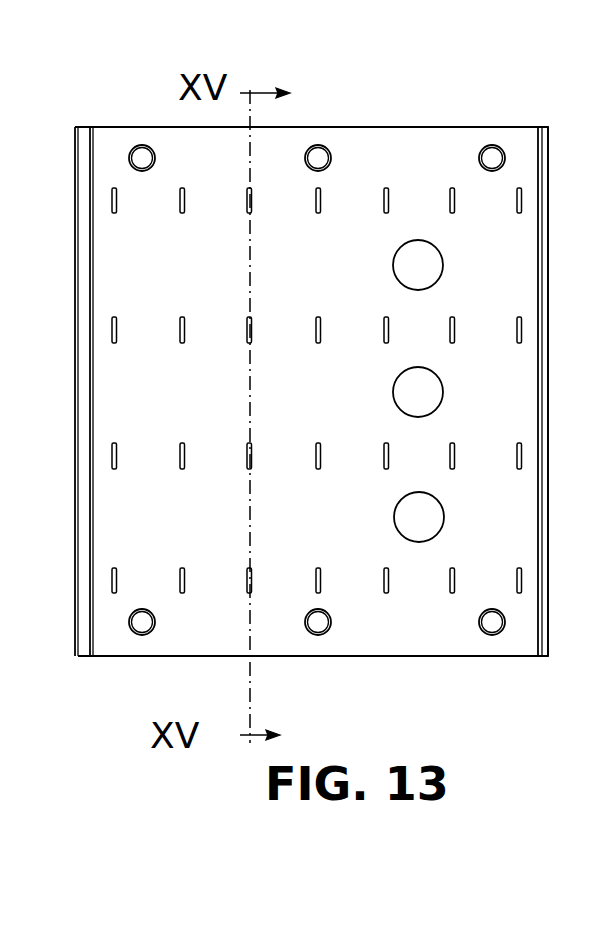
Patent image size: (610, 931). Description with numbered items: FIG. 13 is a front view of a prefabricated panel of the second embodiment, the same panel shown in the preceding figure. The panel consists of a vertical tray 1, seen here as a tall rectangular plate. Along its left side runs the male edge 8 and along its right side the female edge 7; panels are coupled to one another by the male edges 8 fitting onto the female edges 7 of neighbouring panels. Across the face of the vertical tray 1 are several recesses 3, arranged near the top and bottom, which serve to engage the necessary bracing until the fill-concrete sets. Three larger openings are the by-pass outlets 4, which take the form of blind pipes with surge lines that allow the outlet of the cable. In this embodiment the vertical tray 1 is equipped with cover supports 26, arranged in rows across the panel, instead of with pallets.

The vertical tray 1 is at (412, 620).
The recesses 3 is at (488, 158).
The by-pass outlets 4 is at (432, 265).
The female edge 7 is at (550, 128).
The male edge 8 is at (87, 128).
The cover support 26 is at (390, 193).